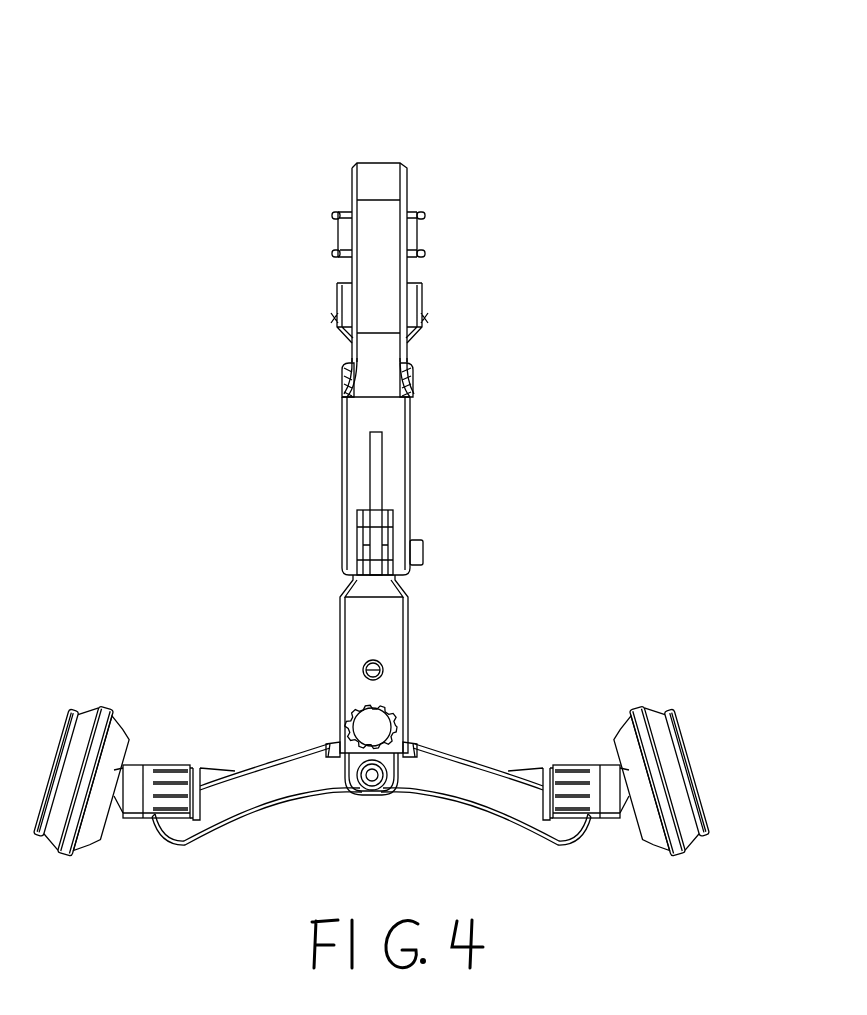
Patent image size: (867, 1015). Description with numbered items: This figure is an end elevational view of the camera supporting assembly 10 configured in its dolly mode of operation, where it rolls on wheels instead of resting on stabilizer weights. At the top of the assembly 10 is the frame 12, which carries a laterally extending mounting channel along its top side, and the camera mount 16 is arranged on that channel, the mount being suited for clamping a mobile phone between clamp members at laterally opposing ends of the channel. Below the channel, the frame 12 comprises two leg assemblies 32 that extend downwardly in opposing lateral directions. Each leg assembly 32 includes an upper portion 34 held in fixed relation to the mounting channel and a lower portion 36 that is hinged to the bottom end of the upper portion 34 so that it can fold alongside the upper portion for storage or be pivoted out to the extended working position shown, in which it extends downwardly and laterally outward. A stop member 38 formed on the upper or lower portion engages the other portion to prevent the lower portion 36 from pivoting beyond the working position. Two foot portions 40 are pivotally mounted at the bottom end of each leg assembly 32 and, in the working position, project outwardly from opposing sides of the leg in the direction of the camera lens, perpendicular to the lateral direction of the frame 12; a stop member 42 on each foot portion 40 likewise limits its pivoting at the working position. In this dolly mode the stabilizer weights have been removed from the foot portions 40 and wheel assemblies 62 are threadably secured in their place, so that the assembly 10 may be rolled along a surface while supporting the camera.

The camera supporting assembly 10 is at (87, 85).
The frame 12 is at (262, 387).
The camera mount 16 is at (263, 268).
The leg assemblies 32 is at (183, 545).
The upper portion 34 is at (455, 470).
The lower portion 36 is at (455, 656).
The stop member 38 is at (366, 531).
The foot portions 40 is at (490, 800).
The stop member 42 is at (289, 723).
The wheel assemblies 62 is at (660, 655).